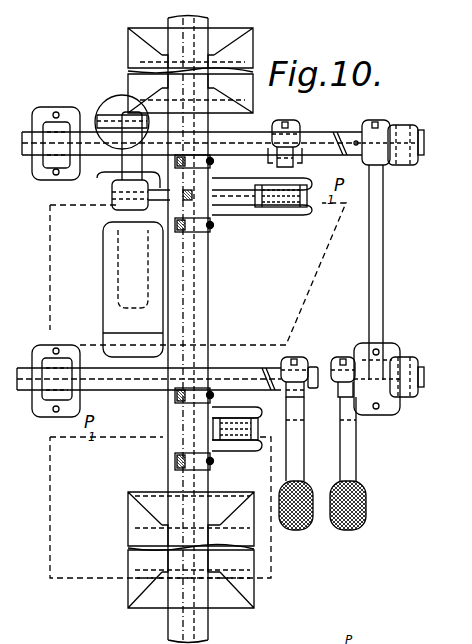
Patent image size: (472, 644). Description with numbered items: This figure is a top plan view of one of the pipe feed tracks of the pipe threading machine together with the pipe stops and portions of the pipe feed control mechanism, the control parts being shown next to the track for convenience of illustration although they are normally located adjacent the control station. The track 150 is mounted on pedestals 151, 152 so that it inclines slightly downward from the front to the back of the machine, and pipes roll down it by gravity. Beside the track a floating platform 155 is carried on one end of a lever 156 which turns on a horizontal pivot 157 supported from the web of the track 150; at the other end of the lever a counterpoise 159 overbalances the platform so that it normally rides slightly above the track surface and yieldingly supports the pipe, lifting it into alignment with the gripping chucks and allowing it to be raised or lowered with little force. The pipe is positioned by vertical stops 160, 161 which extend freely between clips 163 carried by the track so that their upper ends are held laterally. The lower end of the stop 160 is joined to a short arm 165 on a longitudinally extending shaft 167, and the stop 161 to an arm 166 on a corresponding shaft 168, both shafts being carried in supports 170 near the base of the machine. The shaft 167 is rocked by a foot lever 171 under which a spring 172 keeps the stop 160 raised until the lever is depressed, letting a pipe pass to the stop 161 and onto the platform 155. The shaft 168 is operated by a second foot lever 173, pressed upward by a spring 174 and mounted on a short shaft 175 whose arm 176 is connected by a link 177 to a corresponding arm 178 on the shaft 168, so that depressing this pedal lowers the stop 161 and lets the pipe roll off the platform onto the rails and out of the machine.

The track 150 is at (210, 289).
The pedestal 151 is at (252, 55).
The pedestal 152 is at (256, 594).
The floating platform 155 is at (110, 296).
The lever 156 is at (112, 223).
The horizontal pivot 157 is at (113, 191).
The counterpoise 159 is at (113, 99).
The vertical stop 160 is at (234, 441).
The vertical stop 161 is at (288, 198).
The clip 163 is at (241, 180).
The short arm 165 is at (253, 366).
The arm 166 is at (260, 155).
The shaft 167 is at (284, 358).
The shaft 168 is at (317, 138).
The support 170 is at (41, 175).
The foot lever 171 is at (298, 452).
The spring 172 is at (313, 519).
The foot lever 173 is at (355, 452).
The spring 174 is at (367, 505).
The short shaft 175 is at (423, 398).
The arm 176 is at (378, 406).
The link 177 is at (383, 283).
The arm 178 is at (368, 126).